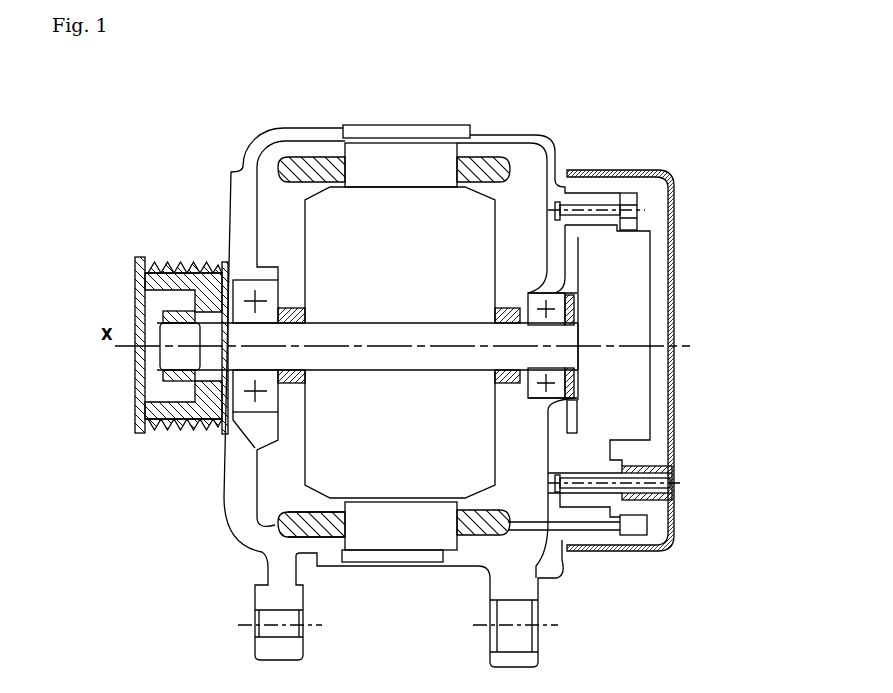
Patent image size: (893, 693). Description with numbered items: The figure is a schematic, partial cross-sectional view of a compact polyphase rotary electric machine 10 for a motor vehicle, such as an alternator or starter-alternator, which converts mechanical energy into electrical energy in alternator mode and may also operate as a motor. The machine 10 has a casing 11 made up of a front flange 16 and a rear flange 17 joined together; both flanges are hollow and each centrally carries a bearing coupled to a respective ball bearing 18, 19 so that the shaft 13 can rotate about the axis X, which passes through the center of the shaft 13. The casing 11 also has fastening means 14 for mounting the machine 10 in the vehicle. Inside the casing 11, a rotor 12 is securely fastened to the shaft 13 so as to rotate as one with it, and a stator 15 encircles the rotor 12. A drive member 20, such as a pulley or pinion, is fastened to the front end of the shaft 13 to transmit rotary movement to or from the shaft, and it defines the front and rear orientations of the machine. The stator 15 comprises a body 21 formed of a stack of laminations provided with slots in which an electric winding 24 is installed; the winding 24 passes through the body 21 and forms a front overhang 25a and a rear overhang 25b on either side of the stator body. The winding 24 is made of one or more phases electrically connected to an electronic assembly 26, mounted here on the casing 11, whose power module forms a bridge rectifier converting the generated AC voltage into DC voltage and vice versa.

The rotary electric machine 10 is at (190, 136).
The casing 11 is at (546, 128).
The rotor 12 is at (313, 201).
The shaft 13 is at (228, 336).
The fastening means 14 is at (260, 600).
The stator 15 is at (312, 158).
The front flange 16 is at (246, 235).
The rear flange 17 is at (553, 158).
The ball bearing 18 is at (248, 408).
The ball bearing 19 is at (557, 293).
The drive member 20 is at (135, 422).
The body 21 is at (368, 538).
The electric winding 24 is at (322, 546).
The front overhang 25a is at (293, 527).
The rear overhang 25b is at (508, 531).
The electronic assembly 26 is at (623, 403).